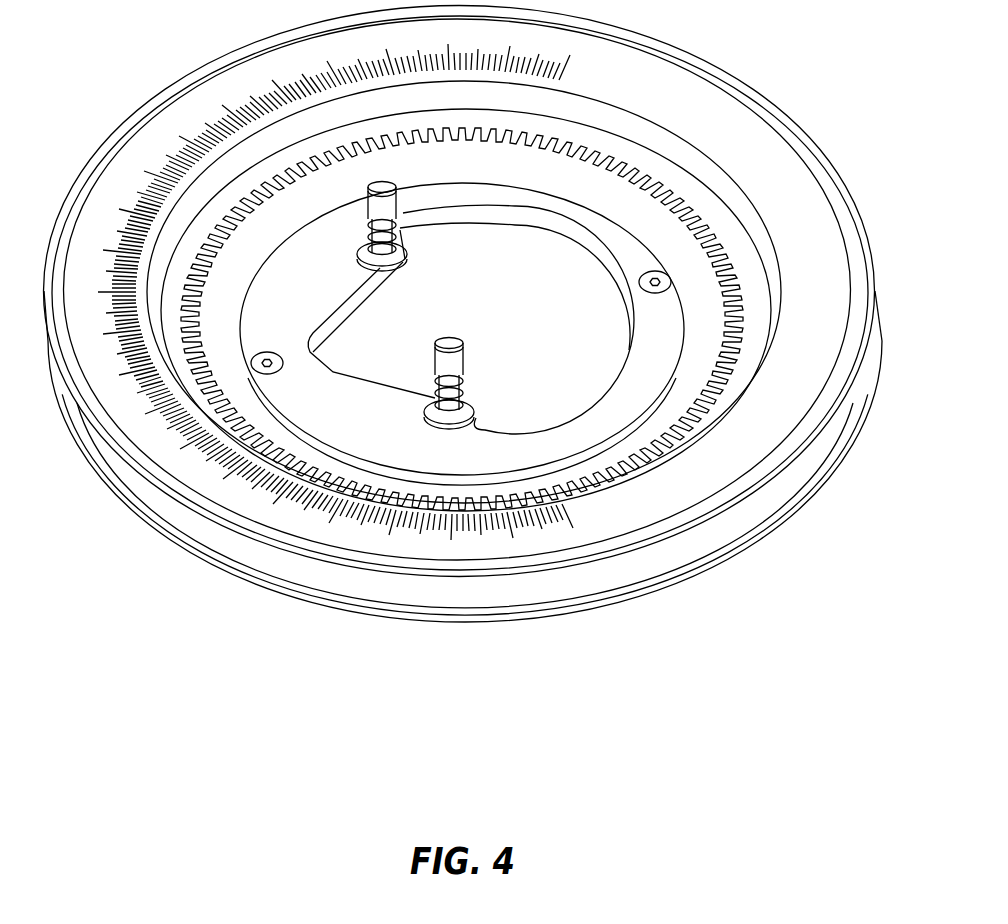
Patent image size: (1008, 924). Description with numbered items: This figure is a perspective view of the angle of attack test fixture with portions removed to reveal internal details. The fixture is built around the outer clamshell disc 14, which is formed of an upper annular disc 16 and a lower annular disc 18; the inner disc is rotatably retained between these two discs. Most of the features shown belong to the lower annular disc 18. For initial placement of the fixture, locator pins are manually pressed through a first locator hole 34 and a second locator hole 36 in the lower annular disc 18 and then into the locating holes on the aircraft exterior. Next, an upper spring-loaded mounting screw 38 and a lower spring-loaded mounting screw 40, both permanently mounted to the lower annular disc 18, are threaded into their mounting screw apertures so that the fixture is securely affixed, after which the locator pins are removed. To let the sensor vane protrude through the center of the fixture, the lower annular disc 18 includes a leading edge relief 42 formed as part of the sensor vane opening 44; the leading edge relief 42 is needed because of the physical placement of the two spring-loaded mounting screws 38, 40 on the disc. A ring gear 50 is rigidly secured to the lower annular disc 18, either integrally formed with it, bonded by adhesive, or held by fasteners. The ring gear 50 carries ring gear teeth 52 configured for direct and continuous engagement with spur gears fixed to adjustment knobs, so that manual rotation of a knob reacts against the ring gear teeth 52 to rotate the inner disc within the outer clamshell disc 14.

The outer clamshell disc 14 is at (778, 50).
The upper annular disc 16 is at (809, 190).
The lower annular disc 18 is at (314, 297).
The first locator hole 34 is at (272, 375).
The second locator hole 36 is at (666, 278).
The upper spring-loaded mounting screw 38 is at (380, 207).
The lower spring-loaded mounting screw 40 is at (455, 359).
The leading edge relief 42 is at (350, 305).
The sensor vane opening 44 is at (562, 236).
The ring gear 50 is at (466, 259).
The ring gear teeth 52 is at (520, 150).